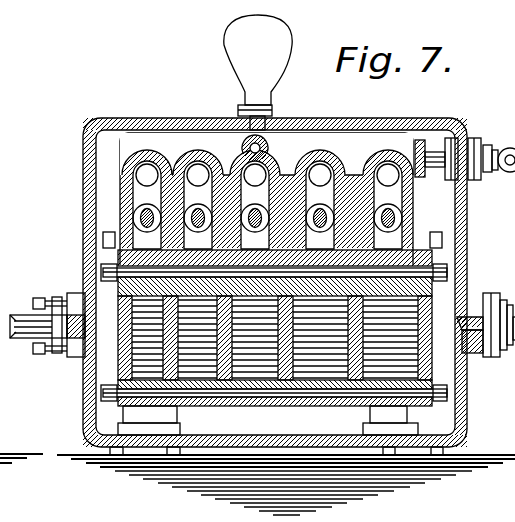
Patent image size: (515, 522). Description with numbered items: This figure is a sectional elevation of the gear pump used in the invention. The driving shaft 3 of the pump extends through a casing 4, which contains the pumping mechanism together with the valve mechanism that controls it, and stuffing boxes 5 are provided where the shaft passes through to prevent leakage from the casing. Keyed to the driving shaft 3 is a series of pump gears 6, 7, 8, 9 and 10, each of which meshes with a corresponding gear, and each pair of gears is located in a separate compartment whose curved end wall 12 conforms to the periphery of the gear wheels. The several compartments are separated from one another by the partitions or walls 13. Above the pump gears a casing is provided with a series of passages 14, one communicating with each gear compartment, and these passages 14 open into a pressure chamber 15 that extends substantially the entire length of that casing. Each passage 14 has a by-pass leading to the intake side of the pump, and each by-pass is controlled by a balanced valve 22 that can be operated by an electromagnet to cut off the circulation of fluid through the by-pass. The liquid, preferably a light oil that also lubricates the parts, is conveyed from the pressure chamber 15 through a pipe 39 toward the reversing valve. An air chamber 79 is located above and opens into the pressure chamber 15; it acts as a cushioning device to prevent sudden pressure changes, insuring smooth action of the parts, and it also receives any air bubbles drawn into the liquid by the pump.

The driving shaft 3 is at (25, 320).
The casing 4 is at (83, 208).
The stuffing boxes 5 is at (67, 357).
The pump gear 6 is at (143, 373).
The pump gear 7 is at (208, 373).
The pump gear 8 is at (260, 380).
The pump gear 9 is at (327, 373).
The pump gear 10 is at (405, 372).
The end wall 12 is at (34, 279).
The partitions 13 is at (290, 372).
The passages 14 is at (140, 192).
The pressure chamber 15 is at (176, 133).
The balanced valve 22 is at (196, 214).
The pipe 39 is at (40, 521).
The air chamber 79 is at (237, 44).